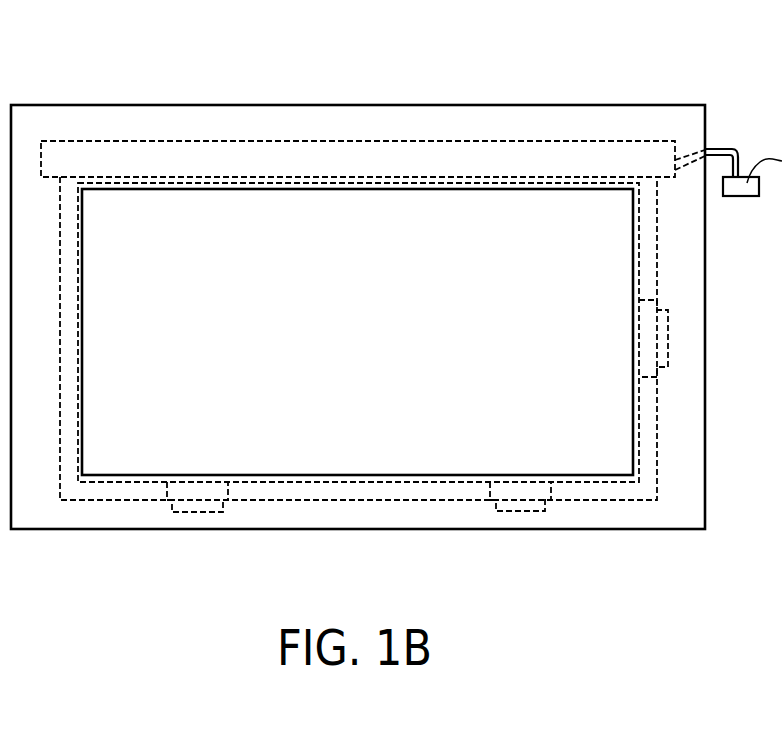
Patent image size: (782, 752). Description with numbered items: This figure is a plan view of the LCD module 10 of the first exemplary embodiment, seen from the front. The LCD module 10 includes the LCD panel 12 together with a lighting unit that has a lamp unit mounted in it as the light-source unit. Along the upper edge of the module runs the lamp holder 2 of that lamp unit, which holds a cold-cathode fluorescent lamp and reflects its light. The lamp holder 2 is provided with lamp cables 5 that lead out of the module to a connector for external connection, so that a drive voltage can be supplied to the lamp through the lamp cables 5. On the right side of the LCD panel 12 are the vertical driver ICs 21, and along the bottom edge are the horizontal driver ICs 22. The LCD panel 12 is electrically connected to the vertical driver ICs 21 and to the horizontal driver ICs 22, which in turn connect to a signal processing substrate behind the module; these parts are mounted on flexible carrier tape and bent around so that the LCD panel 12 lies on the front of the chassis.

The LCD module 10 is at (726, 615).
The lamp holder 2 is at (388, 140).
The lamp cables 5 is at (725, 148).
The LCD panel 12 is at (635, 256).
The vertical driver ICs 21 is at (670, 328).
The horizontal driver ICs 22 is at (200, 512).